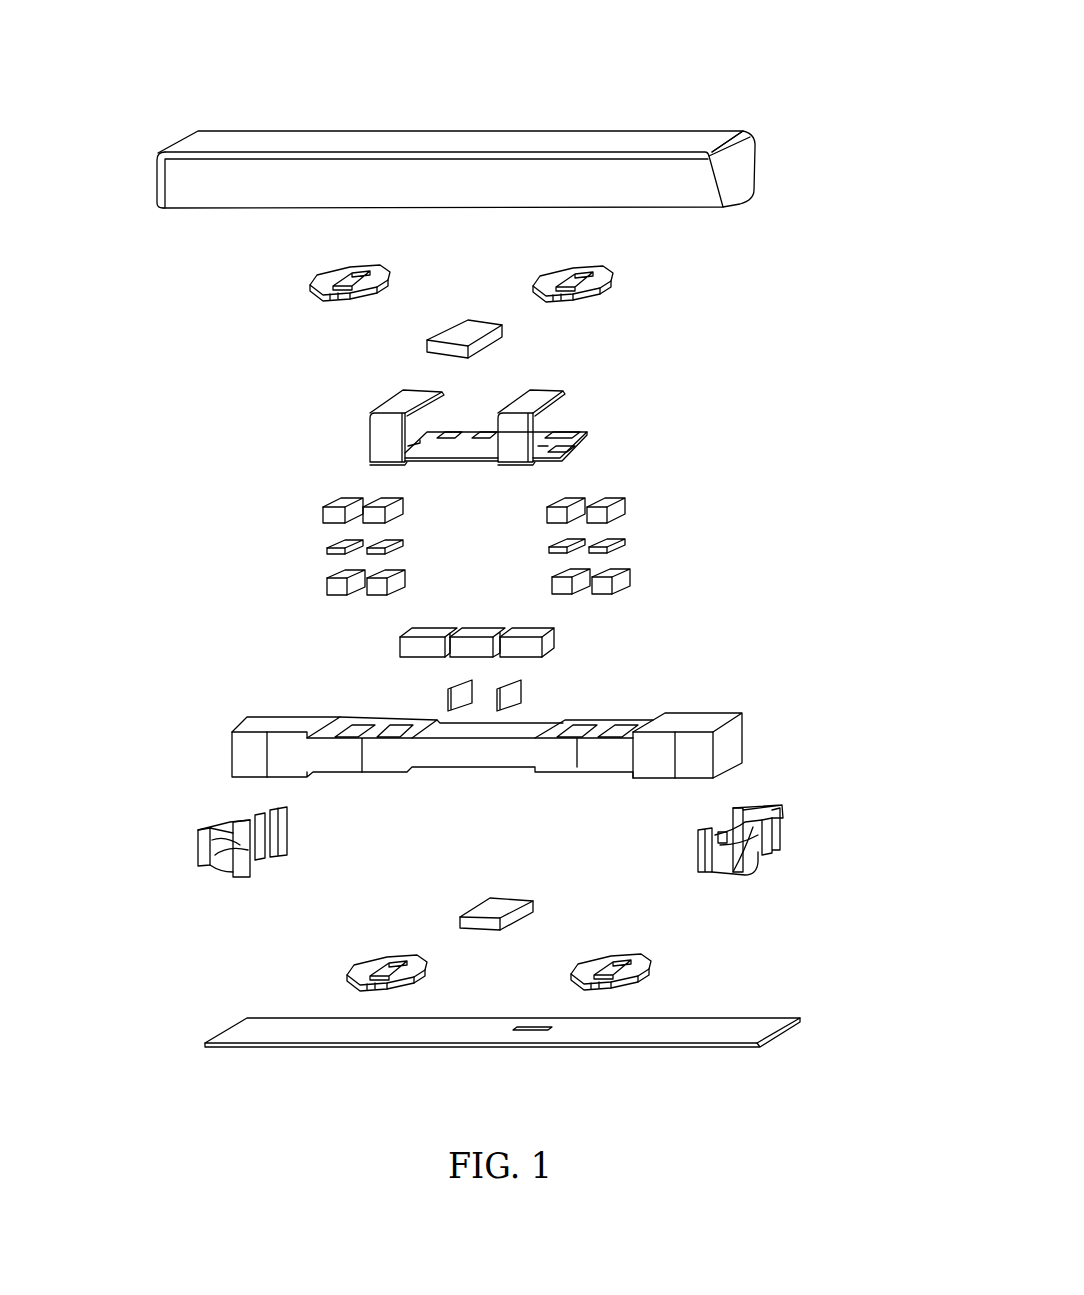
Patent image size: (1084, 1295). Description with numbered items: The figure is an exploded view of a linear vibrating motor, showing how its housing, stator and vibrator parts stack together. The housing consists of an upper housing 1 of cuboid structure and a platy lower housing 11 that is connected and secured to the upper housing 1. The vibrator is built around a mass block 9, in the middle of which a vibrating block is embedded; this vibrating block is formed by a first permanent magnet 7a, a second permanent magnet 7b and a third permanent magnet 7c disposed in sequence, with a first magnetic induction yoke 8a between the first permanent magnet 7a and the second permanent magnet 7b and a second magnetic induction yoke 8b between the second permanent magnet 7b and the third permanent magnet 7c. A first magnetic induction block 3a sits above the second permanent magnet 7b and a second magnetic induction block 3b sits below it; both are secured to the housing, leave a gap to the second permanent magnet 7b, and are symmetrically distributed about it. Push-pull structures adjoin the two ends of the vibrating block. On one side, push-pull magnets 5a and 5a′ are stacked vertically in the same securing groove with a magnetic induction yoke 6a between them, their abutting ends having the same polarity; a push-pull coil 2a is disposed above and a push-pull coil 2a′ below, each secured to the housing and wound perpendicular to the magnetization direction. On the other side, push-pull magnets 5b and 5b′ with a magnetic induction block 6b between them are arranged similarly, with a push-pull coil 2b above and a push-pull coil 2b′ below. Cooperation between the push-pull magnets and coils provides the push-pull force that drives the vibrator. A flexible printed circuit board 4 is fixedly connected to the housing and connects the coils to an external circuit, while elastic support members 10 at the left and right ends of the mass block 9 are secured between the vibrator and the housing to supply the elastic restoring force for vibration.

The upper housing 1 is at (745, 155).
The push-pull coil 2a is at (608, 272).
The push-pull coil 2b is at (330, 275).
The push-pull coil 2a′ is at (640, 968).
The push-pull coil 2b′ is at (350, 973).
The first magnetic induction block 3a is at (455, 334).
The second magnetic induction block 3b is at (512, 911).
The flexible printed circuit board 4 is at (565, 392).
The push-pull magnet 5a is at (620, 500).
The push-pull magnet 5b is at (340, 503).
The push-pull magnet 5a′ is at (620, 590).
The push-pull magnet 5b′ is at (332, 573).
The magnetic induction yoke 6a is at (620, 543).
The magnetic induction block 6b is at (347, 541).
The first permanent magnet 7a is at (412, 645).
The second permanent magnet 7b is at (450, 636).
The third permanent magnet 7c is at (545, 645).
The first magnetic induction yoke 8a is at (447, 699).
The second magnetic induction yoke 8b is at (515, 693).
The mass block 9 is at (720, 733).
The elastic support member 10 is at (762, 847).
The lower housing 11 is at (742, 1040).